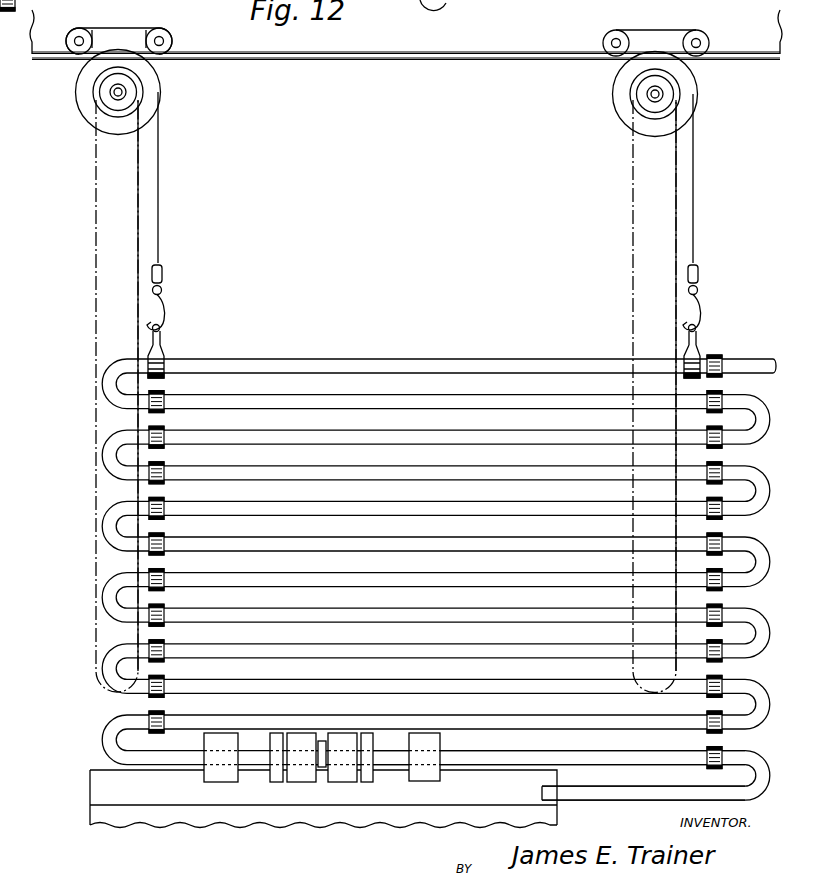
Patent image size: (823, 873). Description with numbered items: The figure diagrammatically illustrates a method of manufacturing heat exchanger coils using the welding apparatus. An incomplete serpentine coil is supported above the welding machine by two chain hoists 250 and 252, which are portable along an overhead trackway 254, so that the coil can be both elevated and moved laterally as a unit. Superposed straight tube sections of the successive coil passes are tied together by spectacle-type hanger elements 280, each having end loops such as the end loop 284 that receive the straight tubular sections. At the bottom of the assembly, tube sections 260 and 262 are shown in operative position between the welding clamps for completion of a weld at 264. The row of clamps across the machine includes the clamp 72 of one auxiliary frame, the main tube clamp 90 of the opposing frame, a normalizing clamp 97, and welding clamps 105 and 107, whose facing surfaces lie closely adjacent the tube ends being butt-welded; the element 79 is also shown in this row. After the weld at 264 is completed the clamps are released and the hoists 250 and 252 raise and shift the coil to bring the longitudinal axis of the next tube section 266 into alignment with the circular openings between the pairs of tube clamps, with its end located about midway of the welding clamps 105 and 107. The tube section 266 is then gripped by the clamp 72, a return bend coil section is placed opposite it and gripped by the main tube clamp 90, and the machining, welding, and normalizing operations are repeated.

The chain hoist 250 is at (160, 96).
The chain hoist 252 is at (616, 110).
The trackway 254 is at (371, 58).
The end loop 284 is at (446, 3).
The hanger element 280 is at (150, 572).
The tube section 260 is at (102, 740).
The tube section 262 is at (592, 752).
The weld 264 is at (321, 741).
The tube section 266 is at (594, 797).
The main tube clamp 90 is at (221, 782).
The plate component 79 is at (274, 782).
The welding clamp 107 is at (300, 782).
The welding clamp 105 is at (345, 782).
The normalizing clamp 97 is at (366, 782).
The clamp 72 is at (430, 781).